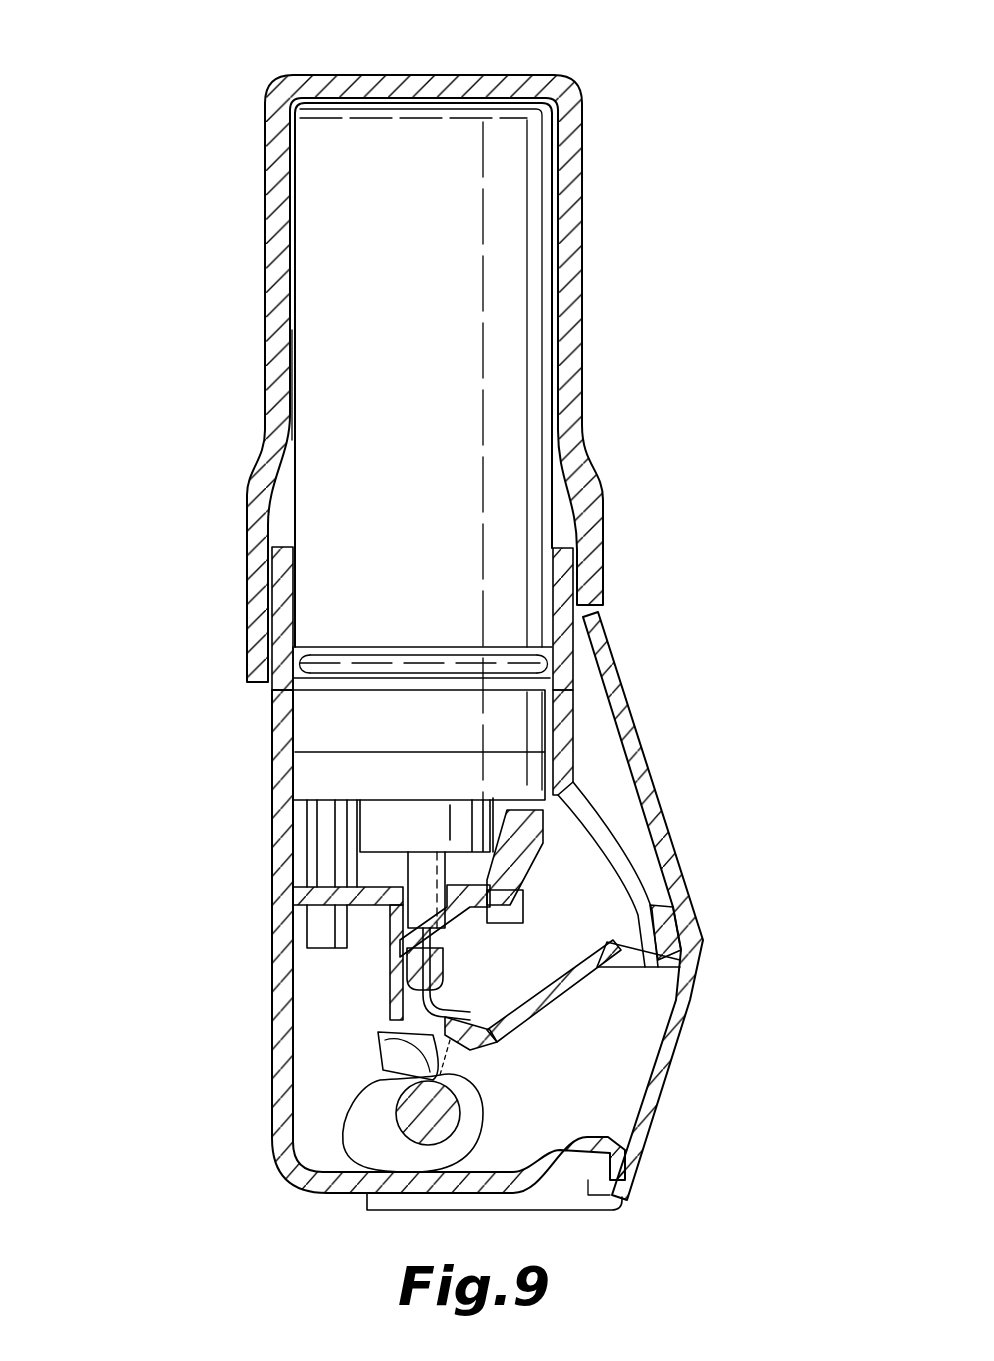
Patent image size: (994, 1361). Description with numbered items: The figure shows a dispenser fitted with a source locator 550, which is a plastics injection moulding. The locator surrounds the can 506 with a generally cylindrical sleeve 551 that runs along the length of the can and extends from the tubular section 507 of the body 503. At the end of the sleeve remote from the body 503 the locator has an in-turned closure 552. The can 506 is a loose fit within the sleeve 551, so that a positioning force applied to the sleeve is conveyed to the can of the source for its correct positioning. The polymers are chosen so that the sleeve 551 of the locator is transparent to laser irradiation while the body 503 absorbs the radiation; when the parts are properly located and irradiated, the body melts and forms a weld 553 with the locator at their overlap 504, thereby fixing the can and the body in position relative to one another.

The source locator 550 is at (608, 327).
The sleeve 551 is at (568, 212).
The in-turned closure 552 is at (487, 75).
The can 506 is at (300, 331).
The weld 553 is at (268, 572).
The overlap 504 is at (256, 646).
The tubular section 507 is at (283, 690).
The body 503 is at (270, 935).